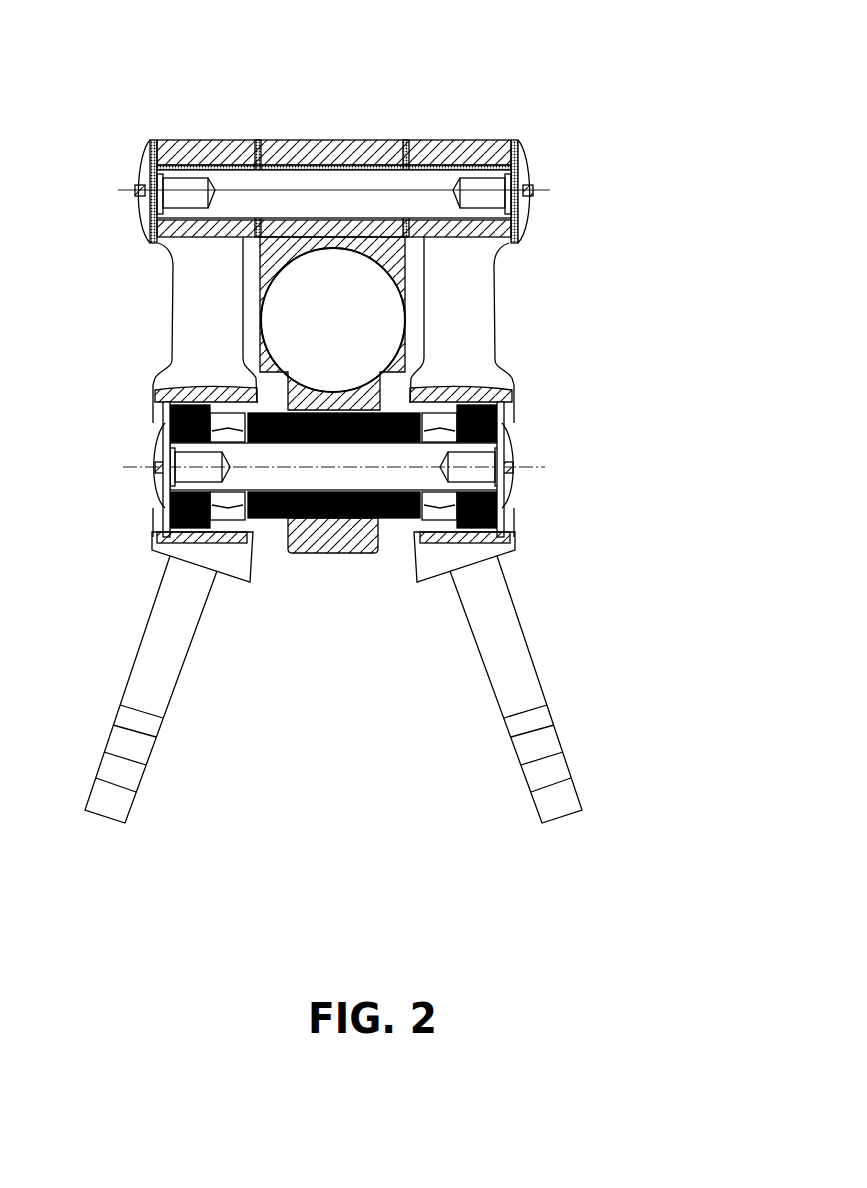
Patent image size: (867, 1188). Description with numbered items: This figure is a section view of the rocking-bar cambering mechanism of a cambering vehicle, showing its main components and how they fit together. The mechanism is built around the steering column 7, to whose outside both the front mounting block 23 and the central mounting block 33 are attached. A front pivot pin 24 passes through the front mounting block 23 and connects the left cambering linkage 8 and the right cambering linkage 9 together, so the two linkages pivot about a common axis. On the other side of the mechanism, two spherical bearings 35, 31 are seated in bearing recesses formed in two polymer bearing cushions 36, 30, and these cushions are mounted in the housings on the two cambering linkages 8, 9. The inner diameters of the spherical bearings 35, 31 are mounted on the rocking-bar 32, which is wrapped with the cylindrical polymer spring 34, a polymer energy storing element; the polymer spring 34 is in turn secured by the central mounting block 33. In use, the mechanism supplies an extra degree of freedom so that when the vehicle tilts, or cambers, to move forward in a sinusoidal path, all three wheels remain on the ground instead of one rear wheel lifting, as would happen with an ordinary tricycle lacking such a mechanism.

The steering column 7 is at (407, 327).
The left cambering linkage 8 is at (173, 273).
The right cambering linkage 9 is at (493, 273).
The front mounting block 23 is at (308, 142).
The front pivot pin 24 is at (347, 187).
The bearing cushion 30 is at (485, 540).
The spherical bearing 31 is at (442, 508).
The rocking-bar 32 is at (373, 458).
The central mounting block 33 is at (347, 553).
The polymer spring 34 is at (274, 520).
The spherical bearing 35 is at (227, 508).
The bearing cushion 36 is at (178, 541).